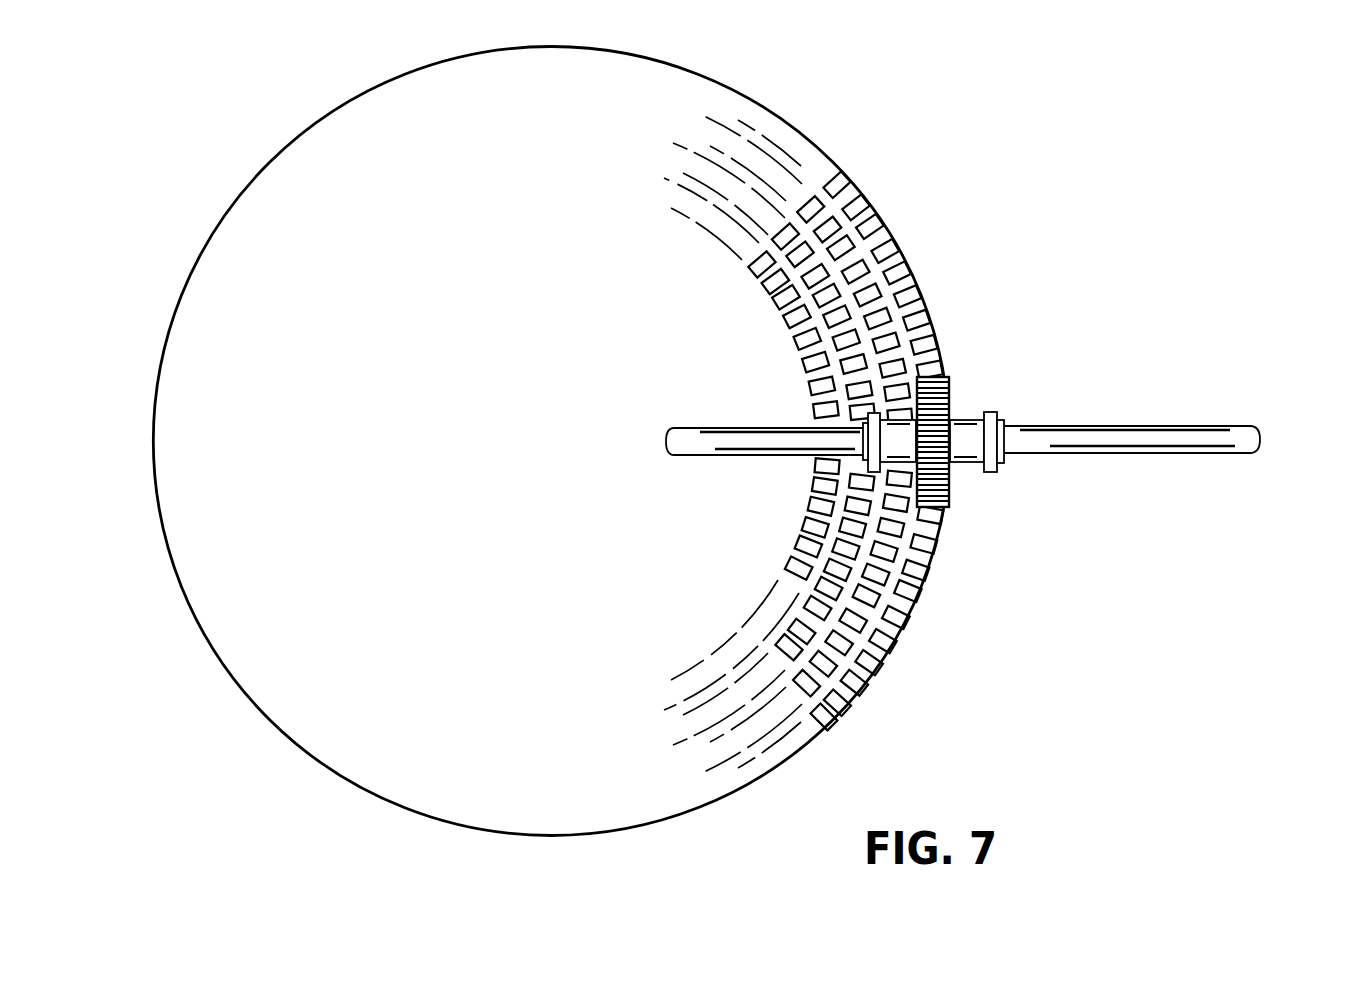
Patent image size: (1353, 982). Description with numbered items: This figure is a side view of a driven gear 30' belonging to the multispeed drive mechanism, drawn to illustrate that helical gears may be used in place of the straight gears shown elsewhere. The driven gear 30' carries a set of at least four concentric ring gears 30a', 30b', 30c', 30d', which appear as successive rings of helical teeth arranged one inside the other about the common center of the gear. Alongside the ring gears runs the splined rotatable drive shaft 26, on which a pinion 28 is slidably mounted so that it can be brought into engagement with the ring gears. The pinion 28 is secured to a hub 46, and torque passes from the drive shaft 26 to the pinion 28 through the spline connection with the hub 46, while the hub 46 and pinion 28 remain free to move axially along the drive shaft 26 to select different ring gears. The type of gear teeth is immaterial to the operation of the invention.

The driven gear 30' is at (551, 424).
The concentric ring gear 30a' is at (746, 444).
The concentric ring gear 30b' is at (763, 444).
The concentric ring gear 30c' is at (851, 444).
The concentric ring gear 30d' is at (848, 434).
The pinion 28 is at (948, 376).
The hub 46 is at (973, 422).
The drive shaft 26 is at (1163, 428).